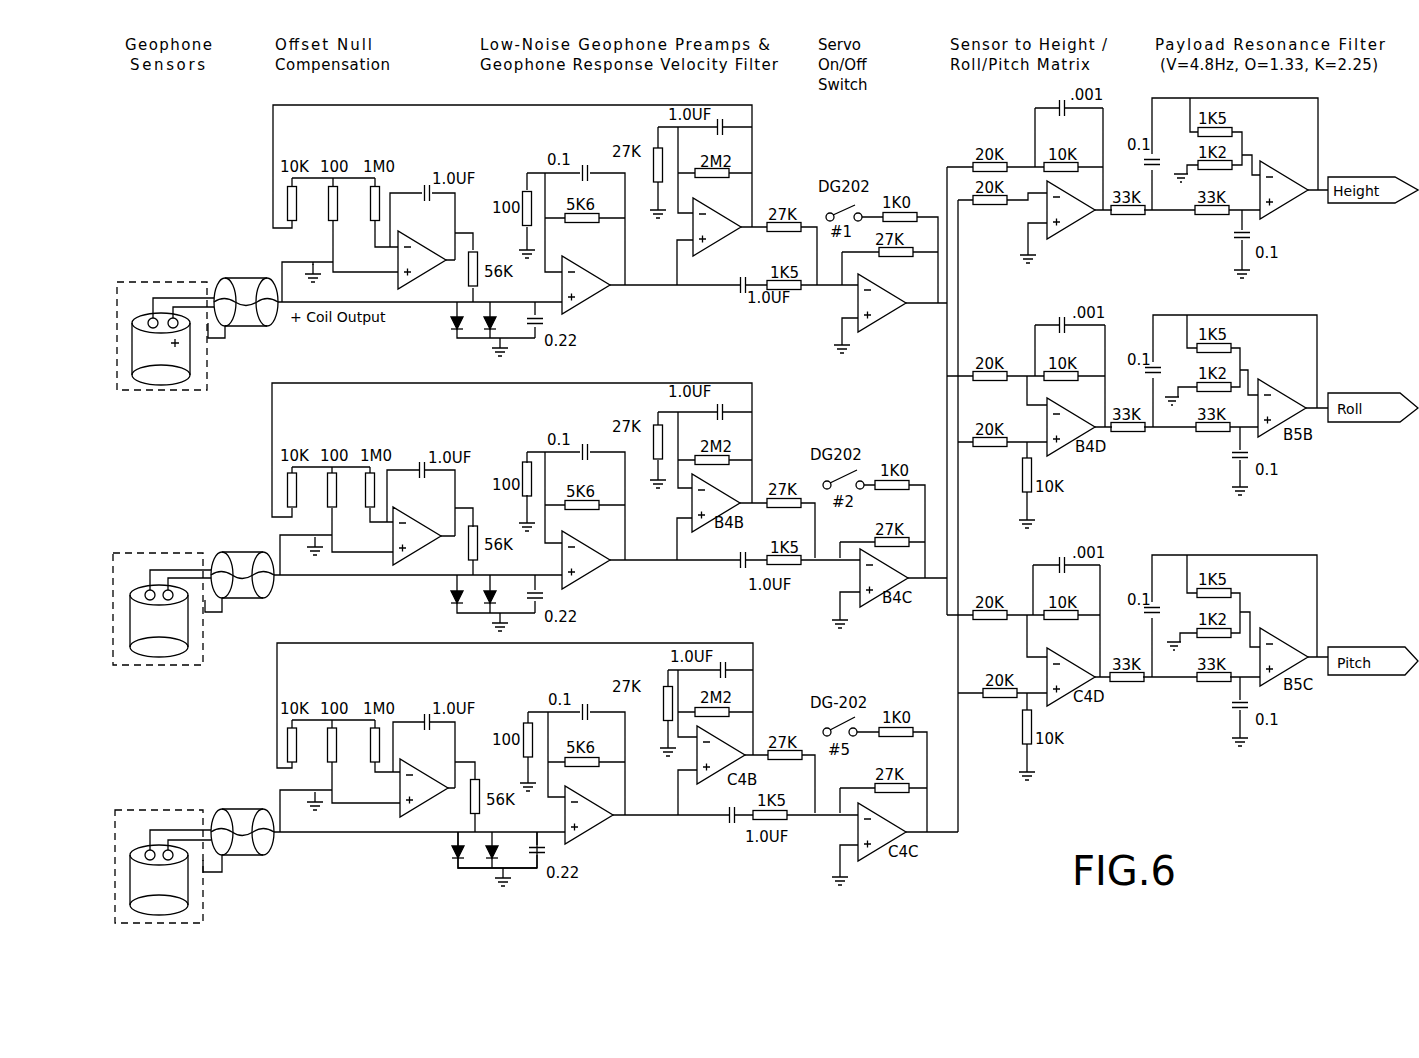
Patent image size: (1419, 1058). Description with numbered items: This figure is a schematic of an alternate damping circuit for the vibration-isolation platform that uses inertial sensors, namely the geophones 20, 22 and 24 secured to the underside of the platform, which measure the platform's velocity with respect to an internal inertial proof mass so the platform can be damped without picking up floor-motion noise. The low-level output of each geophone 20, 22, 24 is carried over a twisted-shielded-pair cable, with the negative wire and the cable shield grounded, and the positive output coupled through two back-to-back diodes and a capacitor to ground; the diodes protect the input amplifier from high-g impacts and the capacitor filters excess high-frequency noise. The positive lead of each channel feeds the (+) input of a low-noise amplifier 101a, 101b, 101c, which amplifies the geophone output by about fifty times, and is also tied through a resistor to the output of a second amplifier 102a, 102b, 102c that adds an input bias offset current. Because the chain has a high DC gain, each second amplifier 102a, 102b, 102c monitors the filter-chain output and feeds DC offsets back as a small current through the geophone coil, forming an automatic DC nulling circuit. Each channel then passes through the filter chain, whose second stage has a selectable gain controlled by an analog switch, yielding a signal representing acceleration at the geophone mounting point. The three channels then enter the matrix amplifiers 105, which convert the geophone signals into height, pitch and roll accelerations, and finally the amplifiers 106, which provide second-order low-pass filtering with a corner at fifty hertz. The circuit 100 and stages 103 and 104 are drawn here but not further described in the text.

The geophone 20 is at (165, 553).
The geophone 22 is at (172, 282).
The geophone 24 is at (172, 810).
The preamplifier circuit 100 is at (622, 860).
The low-noise amplifier 101a is at (595, 255).
The low-noise amplifier 101b is at (601, 542).
The low-noise amplifier 101c is at (603, 792).
The second amplifier 102a is at (437, 234).
The second amplifier 102b is at (434, 509).
The second amplifier 102c is at (439, 757).
The velocity filter operational amplifier 103 is at (714, 210).
The servo on/off switch operational amplifier 104 is at (893, 276).
The matrix amplifiers 105 is at (1083, 189).
The low-pass filter amplifiers 106 is at (1282, 173).